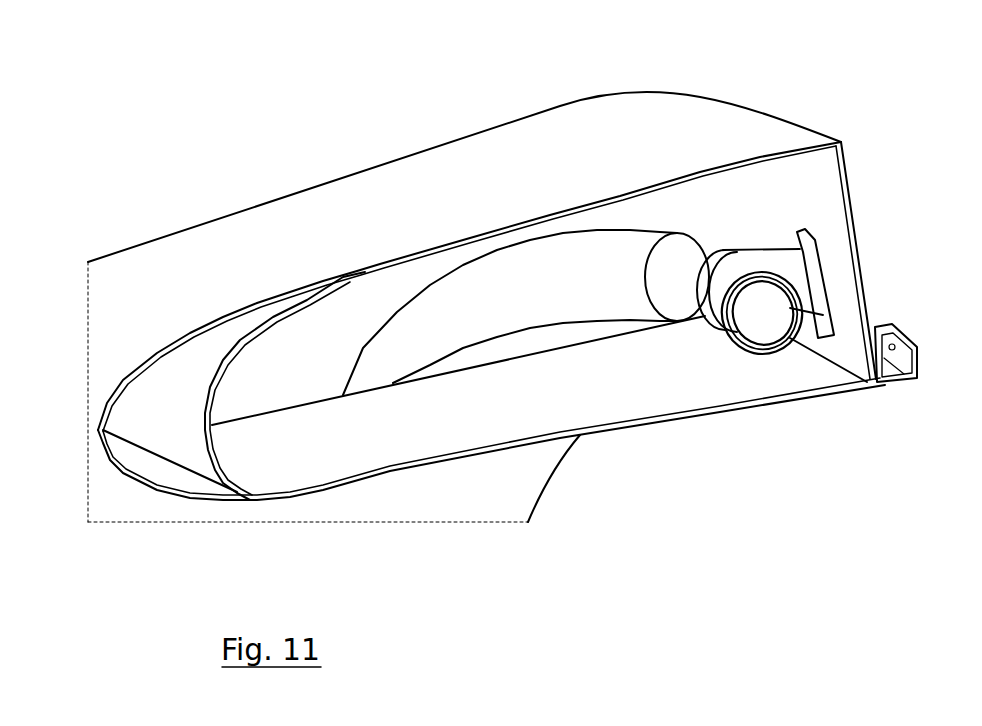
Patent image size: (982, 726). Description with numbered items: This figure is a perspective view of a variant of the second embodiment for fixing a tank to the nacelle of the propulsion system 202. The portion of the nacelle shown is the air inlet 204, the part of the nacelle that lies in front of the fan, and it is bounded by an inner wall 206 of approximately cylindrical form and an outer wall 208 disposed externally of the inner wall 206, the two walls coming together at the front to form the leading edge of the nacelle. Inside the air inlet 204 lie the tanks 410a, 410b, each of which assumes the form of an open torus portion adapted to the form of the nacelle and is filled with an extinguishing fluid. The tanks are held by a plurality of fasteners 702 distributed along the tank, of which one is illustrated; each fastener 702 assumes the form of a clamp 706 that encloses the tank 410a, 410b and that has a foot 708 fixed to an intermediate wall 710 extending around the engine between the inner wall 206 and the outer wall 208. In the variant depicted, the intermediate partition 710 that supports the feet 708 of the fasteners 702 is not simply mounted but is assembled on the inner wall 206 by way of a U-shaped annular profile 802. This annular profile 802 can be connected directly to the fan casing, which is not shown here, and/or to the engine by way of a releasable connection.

The propulsion system 202 is at (149, 170).
The air inlet 204 is at (257, 463).
The inner wall 206 is at (418, 473).
The outer wall 208 is at (322, 210).
The tank 410a is at (528, 270).
The tank 410b is at (750, 325).
The fastener 702 is at (588, 557).
The clamp 706 is at (723, 292).
The foot 708 is at (833, 335).
The intermediate wall 710 is at (837, 218).
The U-shaped annular profile 802 is at (903, 382).